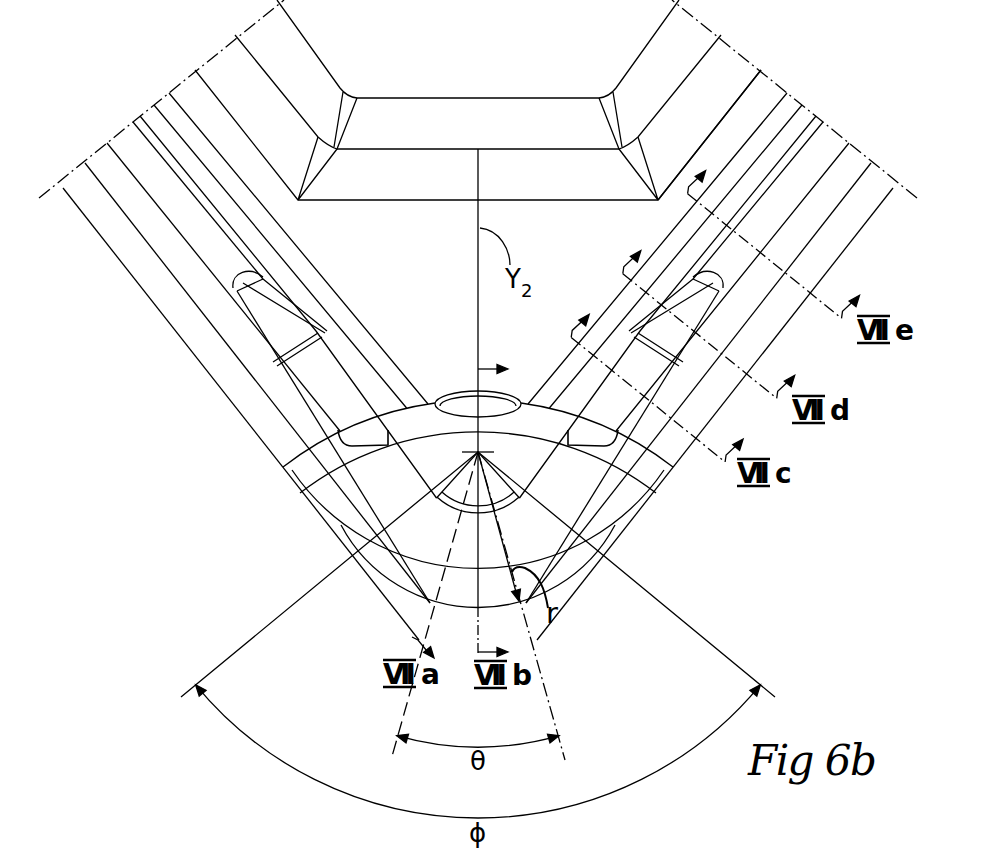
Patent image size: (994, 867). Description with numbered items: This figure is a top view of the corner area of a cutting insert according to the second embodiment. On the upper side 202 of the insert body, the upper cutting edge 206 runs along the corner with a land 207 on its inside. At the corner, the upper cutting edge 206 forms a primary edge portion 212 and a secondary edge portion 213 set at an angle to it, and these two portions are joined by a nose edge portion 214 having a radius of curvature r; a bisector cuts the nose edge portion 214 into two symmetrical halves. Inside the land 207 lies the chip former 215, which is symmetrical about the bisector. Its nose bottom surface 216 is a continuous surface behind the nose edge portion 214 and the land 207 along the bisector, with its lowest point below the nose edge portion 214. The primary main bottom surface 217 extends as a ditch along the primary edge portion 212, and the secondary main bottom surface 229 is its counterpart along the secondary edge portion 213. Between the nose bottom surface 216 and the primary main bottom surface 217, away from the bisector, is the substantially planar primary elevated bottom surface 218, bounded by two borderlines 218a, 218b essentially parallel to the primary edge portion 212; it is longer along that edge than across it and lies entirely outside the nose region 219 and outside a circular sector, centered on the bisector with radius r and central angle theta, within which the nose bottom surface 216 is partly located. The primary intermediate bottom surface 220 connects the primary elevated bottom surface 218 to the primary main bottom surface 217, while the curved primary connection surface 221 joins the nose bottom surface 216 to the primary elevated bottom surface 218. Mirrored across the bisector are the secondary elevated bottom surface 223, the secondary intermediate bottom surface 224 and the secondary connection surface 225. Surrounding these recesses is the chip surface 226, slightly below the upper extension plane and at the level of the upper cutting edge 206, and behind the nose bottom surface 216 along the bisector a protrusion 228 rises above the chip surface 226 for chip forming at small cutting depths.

The upper side 202 is at (761, 97).
The upper cutting edge 206 is at (78, 222).
The land 207 is at (122, 250).
The primary edge portion 212 is at (775, 343).
The secondary edge portion 213 is at (244, 422).
The nose edge portion 214 is at (565, 585).
The chip former 215 is at (224, 262).
The nose bottom surface 216 is at (540, 464).
The primary main bottom surface 217 is at (805, 174).
The primary elevated bottom surface 218 is at (643, 374).
The borderline 218a is at (585, 395).
The borderline 218b is at (632, 409).
The nose region 219 is at (432, 582).
The primary intermediate bottom surface 220 is at (686, 305).
The primary connection surface 221 is at (522, 452).
The secondary elevated bottom surface 223 is at (325, 377).
The secondary intermediate bottom surface 224 is at (272, 315).
The secondary connection surface 225 is at (420, 444).
The chip surface 226 is at (588, 268).
The protrusion 228 is at (467, 405).
The secondary main bottom surface 229 is at (198, 224).